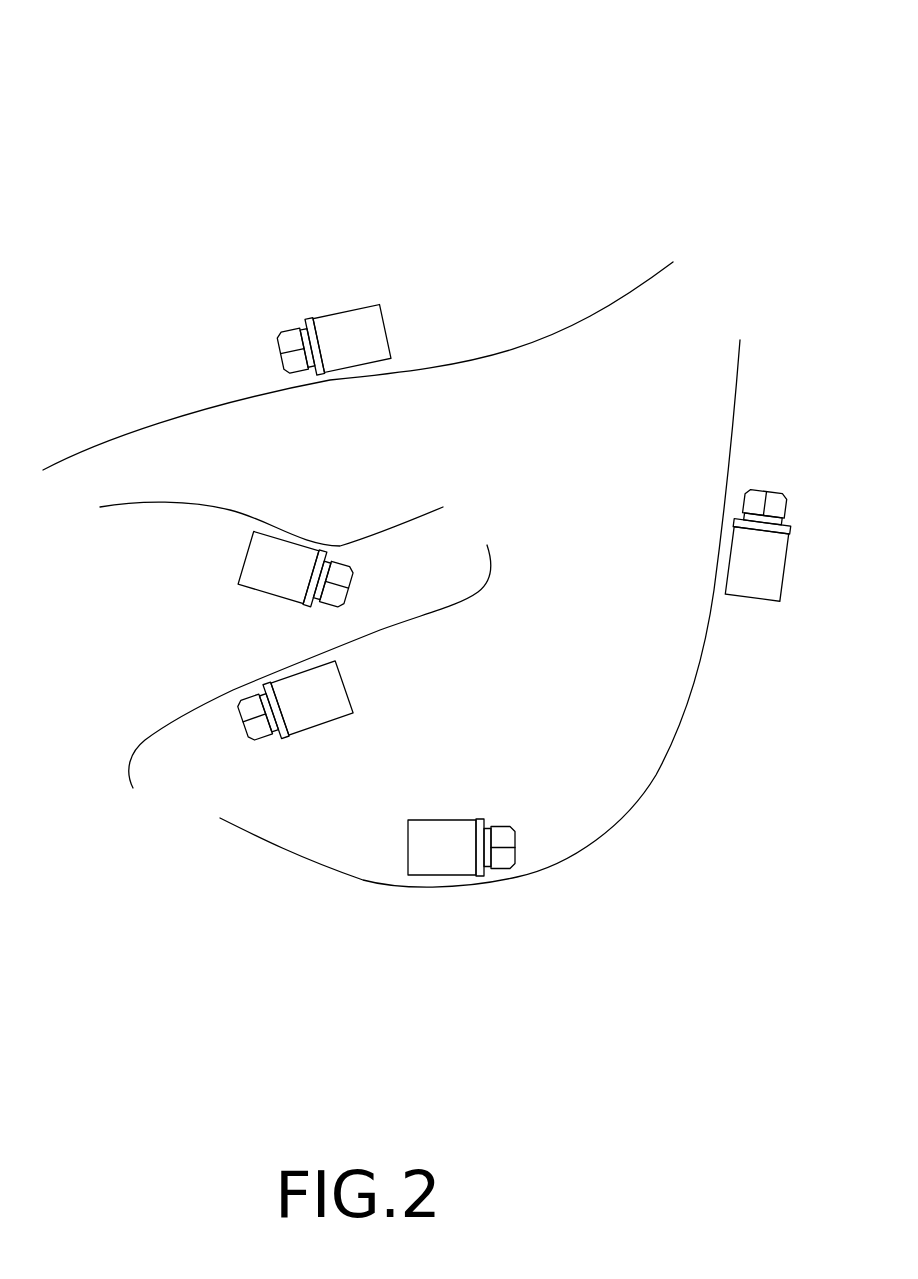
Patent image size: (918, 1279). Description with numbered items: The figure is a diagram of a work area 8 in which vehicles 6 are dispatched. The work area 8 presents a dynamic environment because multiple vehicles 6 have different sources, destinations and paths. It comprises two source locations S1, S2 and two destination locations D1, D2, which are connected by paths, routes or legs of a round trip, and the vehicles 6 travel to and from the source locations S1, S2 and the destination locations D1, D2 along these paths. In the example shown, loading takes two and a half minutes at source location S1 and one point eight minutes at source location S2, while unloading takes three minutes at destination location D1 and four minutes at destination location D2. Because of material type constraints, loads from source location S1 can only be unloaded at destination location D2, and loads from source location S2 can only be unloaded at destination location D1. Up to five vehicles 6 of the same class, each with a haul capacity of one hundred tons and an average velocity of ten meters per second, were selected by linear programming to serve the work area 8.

The vehicle 6 is at (342, 317).
The work area 8 is at (407, 443).
The source location S1 is at (353, 396).
The source location S2 is at (310, 695).
The destination location D1 is at (485, 566).
The destination location D2 is at (305, 512).